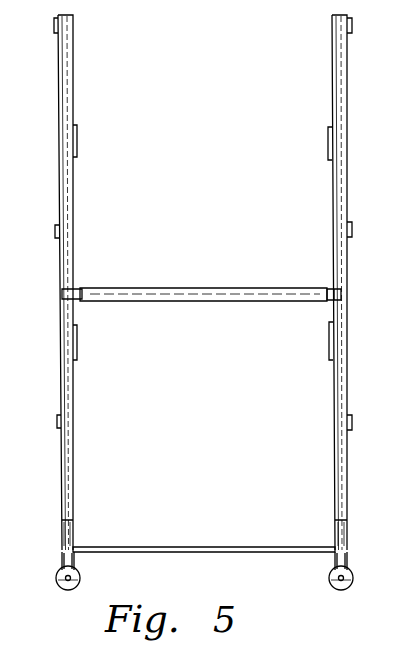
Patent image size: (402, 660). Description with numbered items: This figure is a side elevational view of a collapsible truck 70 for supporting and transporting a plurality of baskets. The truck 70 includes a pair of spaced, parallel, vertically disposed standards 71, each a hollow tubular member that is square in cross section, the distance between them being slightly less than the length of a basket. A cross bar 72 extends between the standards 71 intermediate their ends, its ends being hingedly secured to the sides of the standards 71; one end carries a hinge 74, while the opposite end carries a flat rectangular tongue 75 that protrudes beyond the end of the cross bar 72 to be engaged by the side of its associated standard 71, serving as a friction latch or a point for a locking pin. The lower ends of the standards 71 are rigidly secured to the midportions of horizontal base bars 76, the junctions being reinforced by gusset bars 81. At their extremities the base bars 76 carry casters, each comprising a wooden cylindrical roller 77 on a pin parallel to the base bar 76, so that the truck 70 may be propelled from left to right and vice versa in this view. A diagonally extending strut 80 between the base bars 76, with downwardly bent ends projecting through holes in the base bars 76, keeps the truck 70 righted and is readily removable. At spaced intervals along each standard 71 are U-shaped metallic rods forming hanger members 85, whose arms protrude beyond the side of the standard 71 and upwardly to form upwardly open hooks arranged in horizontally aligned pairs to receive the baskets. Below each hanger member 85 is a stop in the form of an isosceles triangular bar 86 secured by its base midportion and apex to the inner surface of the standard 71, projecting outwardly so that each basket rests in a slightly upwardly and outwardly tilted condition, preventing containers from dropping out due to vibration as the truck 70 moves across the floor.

The truck 70 is at (349, 89).
The standard 71 is at (70, 400).
The cross bar 72 is at (193, 289).
The hinge 74 is at (329, 289).
The tongue 75 is at (74, 289).
The base bar 76 is at (63, 559).
The roller 77 is at (80, 582).
The strut 80 is at (195, 547).
The gusset bar 81 is at (70, 530).
The hanger member 85 is at (53, 30).
The bar 86 is at (77, 142).